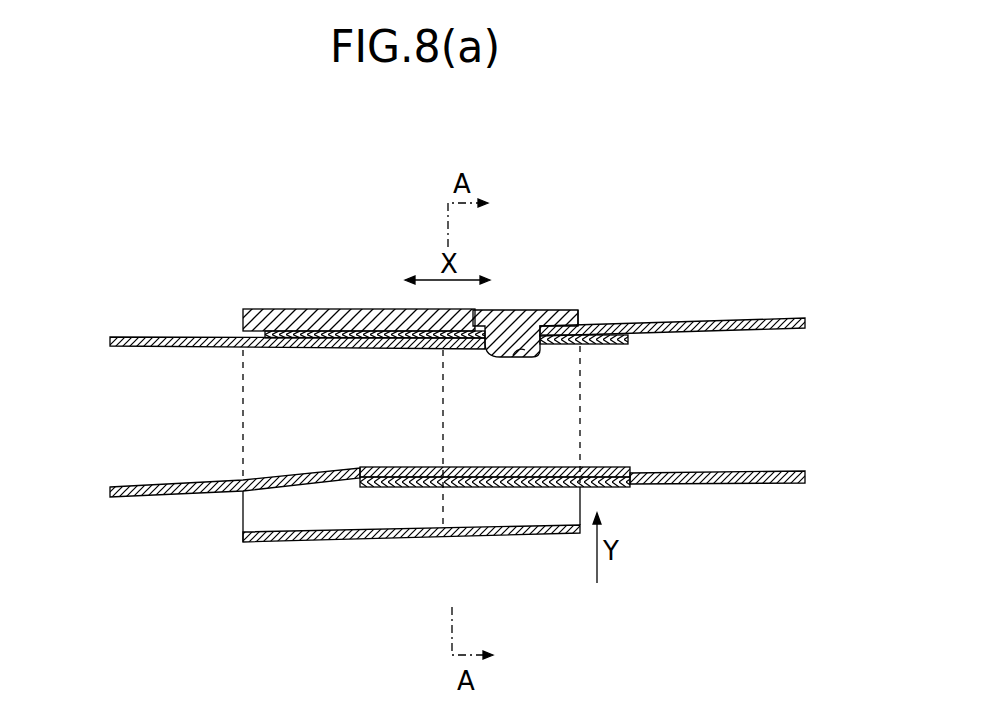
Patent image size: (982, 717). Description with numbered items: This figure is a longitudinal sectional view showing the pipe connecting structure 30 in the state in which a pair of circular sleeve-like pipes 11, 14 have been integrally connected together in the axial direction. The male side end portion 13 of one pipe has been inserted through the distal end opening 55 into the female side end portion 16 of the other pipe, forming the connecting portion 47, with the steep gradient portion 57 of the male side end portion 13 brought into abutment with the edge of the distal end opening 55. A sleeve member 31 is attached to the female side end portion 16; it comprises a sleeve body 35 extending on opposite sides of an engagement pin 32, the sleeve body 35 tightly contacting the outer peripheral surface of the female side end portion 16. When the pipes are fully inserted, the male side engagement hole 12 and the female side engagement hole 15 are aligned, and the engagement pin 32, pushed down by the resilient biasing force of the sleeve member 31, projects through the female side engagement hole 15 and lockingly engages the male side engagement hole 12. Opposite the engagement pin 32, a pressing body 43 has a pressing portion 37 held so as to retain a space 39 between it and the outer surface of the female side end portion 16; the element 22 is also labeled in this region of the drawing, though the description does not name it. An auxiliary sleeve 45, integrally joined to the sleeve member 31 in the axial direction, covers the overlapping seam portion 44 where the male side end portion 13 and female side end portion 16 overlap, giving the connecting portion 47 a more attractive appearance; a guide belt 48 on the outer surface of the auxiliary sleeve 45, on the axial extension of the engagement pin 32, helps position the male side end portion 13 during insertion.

The circular sleeve-like pipe 11 is at (150, 337).
The male side engagement hole 12 is at (530, 356).
The male side end portion 13 is at (362, 350).
The circular sleeve-like pipe 14 is at (752, 318).
The female side engagement hole 15 is at (492, 348).
The female side end portion 16 is at (487, 308).
The plate member 22 is at (565, 505).
The pipe connecting structure 30 is at (507, 205).
The sleeve member 31 is at (561, 298).
The engagement pin 32 is at (513, 355).
The sleeve body 35 is at (574, 308).
The pressing portion 37 is at (560, 538).
The space 39 is at (462, 505).
The pressing body 43 is at (475, 537).
The seam portion 44 is at (351, 331).
The auxiliary sleeve 45 is at (265, 540).
The connecting portion 47 is at (518, 495).
The guide belt 48 is at (372, 309).
The distal end opening 55 is at (288, 450).
The steep gradient portion 57 is at (263, 310).